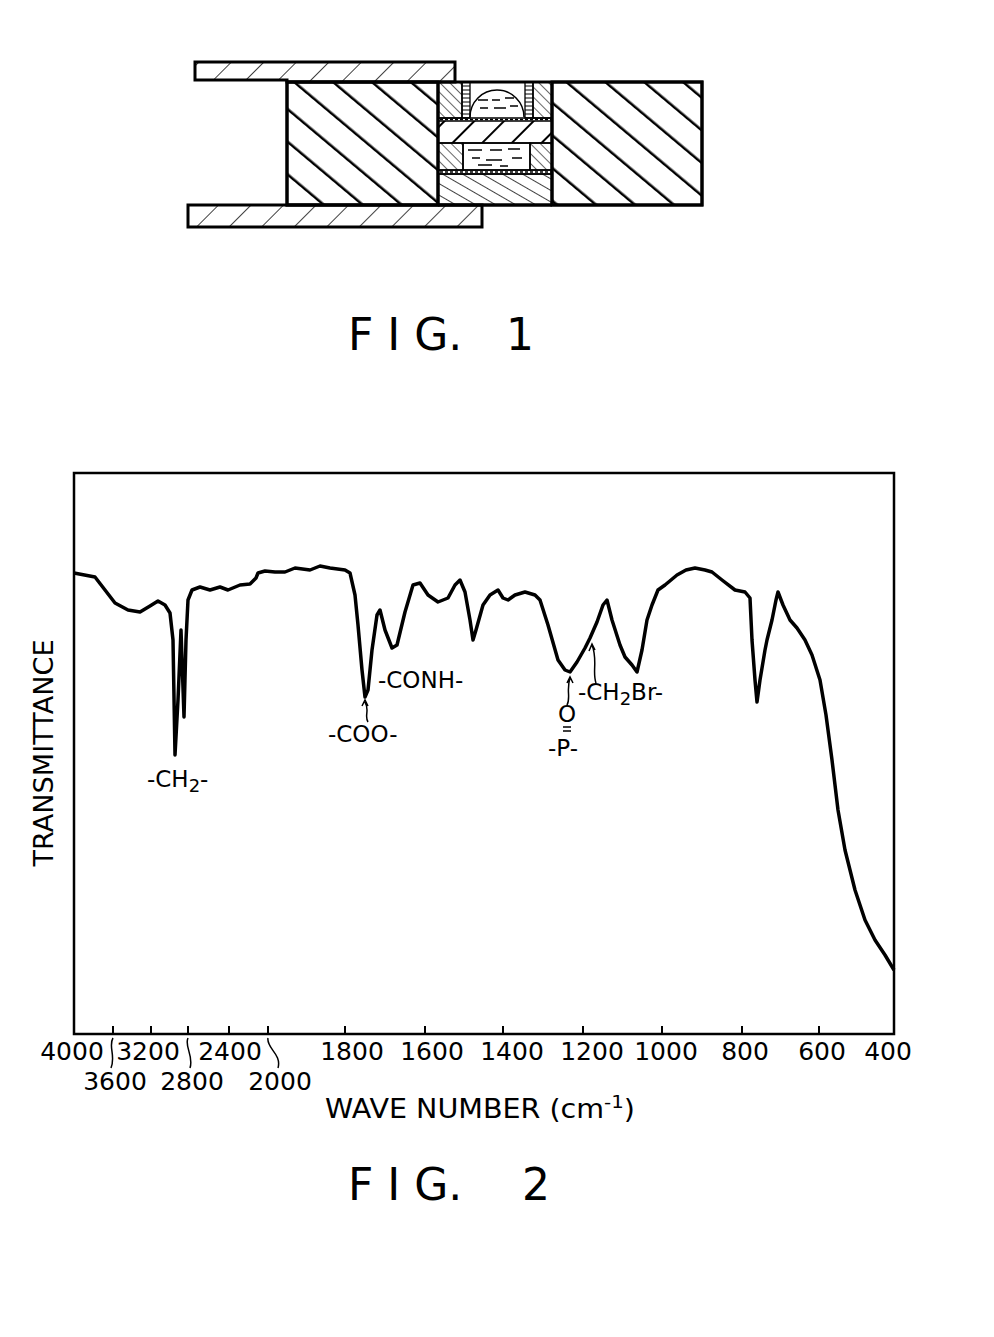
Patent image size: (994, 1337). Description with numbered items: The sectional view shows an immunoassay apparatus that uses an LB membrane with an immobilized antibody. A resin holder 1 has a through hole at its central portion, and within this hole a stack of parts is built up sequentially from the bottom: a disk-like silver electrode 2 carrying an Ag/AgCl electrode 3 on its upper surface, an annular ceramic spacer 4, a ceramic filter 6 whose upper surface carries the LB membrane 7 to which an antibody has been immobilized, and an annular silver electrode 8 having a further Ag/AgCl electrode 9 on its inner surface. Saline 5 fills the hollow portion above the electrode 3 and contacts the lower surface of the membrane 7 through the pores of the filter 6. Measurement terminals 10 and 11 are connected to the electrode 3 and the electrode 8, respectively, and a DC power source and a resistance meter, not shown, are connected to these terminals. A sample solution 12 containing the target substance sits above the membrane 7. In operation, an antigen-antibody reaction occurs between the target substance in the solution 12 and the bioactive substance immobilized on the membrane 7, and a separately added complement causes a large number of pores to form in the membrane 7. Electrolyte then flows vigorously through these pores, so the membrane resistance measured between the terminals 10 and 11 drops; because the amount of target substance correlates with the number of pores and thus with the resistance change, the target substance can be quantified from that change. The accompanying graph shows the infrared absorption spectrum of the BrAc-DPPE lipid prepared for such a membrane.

The resin holder 1 is at (693, 147).
The disk-like silver electrode 2 is at (490, 206).
The Ag/AgCl electrode 3 is at (510, 206).
The annular ceramic spacer 4 is at (520, 165).
The saline 5 is at (538, 206).
The ceramic filter 6 is at (516, 132).
The LB membrane 7 is at (470, 82).
The annular silver electrode 8 is at (543, 87).
The Ag/AgCl electrode 9 is at (528, 82).
The measurement terminal 10 is at (225, 230).
The measurement terminal 11 is at (245, 62).
The sample solution 12 is at (490, 87).